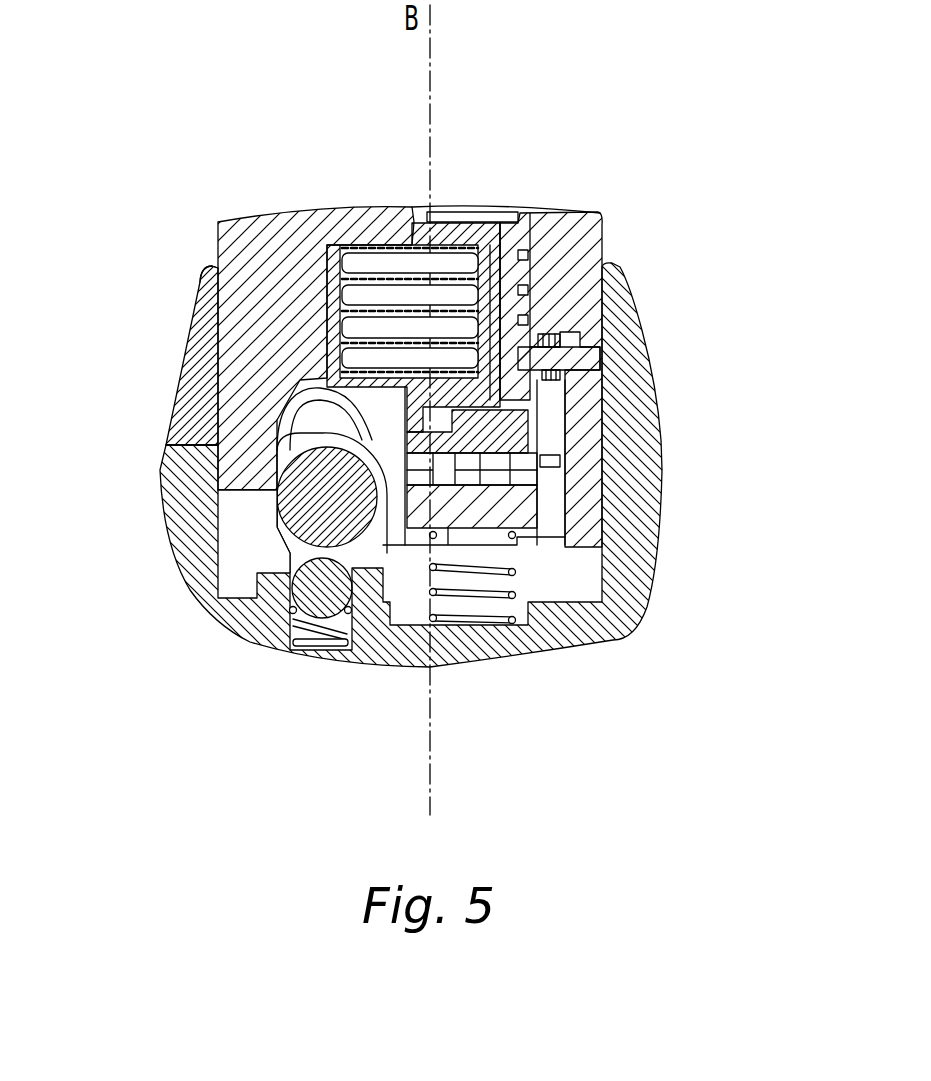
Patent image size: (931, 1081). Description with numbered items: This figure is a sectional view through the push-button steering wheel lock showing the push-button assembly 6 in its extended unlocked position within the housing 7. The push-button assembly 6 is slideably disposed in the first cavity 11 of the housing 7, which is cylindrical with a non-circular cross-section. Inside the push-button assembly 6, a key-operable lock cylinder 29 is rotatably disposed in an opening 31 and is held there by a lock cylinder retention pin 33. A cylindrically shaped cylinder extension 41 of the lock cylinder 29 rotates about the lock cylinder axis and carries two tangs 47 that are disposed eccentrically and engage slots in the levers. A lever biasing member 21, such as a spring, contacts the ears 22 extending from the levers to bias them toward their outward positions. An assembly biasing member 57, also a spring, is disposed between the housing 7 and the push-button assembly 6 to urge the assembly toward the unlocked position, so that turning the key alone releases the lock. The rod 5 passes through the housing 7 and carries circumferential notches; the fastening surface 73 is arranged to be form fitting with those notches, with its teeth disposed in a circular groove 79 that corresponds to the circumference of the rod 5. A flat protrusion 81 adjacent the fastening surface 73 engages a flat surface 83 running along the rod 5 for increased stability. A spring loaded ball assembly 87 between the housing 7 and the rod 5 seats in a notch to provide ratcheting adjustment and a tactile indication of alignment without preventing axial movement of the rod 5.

The rod 5 is at (322, 497).
The push-button assembly 6 is at (283, 203).
The housing 7 is at (186, 340).
The first cavity 11 is at (200, 268).
The lever biasing member 21 is at (627, 593).
The ears 22 is at (553, 460).
The lock cylinder 29 is at (485, 212).
The opening 31 is at (558, 220).
The lock cylinder retention pin 33 is at (600, 363).
The cylinder extension 41 is at (510, 437).
The tangs 47 is at (447, 470).
The assembly biasing member 57 is at (505, 555).
The fastening surface 73 is at (288, 412).
The circular groove 79 is at (305, 395).
The flat protrusion 81 is at (230, 451).
The flat surface 83 is at (272, 522).
The spring loaded ball assembly 87 is at (288, 598).